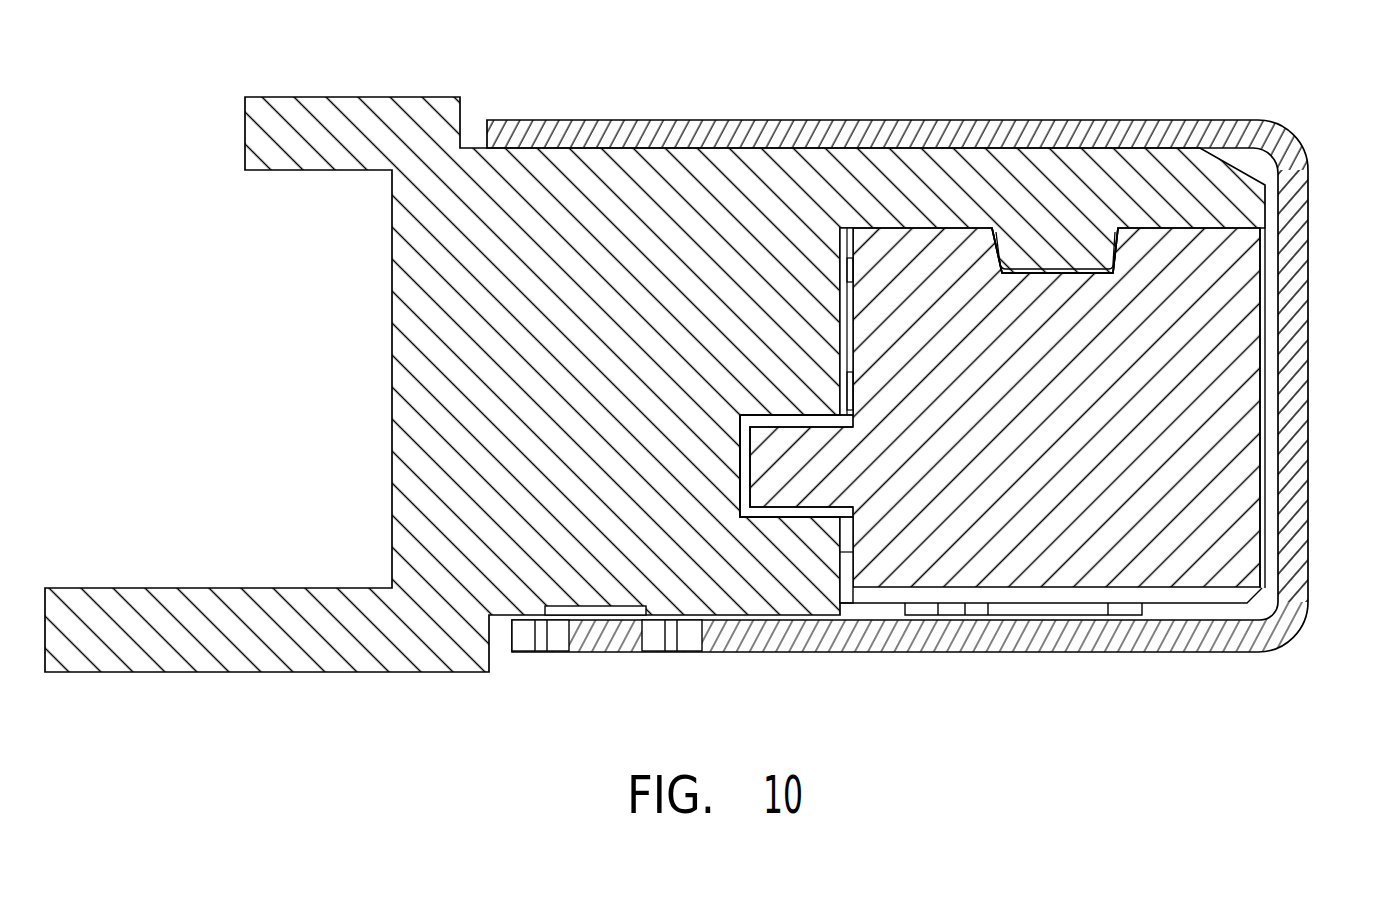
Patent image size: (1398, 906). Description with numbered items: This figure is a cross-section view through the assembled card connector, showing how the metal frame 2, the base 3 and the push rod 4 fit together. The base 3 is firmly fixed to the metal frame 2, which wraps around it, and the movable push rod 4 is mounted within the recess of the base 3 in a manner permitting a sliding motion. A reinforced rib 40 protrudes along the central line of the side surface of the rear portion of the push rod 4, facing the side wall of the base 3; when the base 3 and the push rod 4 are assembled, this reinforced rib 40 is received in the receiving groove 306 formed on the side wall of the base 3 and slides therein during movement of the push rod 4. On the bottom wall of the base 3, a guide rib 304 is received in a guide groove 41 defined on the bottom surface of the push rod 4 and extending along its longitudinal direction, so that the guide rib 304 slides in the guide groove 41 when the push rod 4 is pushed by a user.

The metal frame 2 is at (812, 133).
The base 3 is at (377, 110).
The push rod 4 is at (1220, 395).
The reinforced rib 40 is at (788, 462).
The guide groove 41 is at (1115, 276).
The guide rib 304 is at (1047, 262).
The receiving groove 306 is at (740, 500).